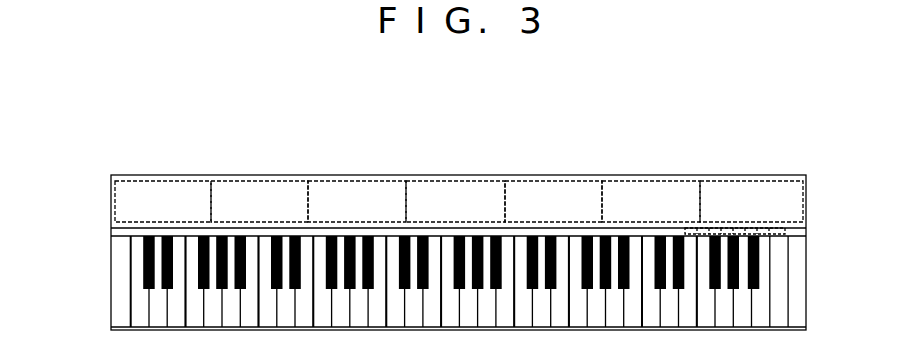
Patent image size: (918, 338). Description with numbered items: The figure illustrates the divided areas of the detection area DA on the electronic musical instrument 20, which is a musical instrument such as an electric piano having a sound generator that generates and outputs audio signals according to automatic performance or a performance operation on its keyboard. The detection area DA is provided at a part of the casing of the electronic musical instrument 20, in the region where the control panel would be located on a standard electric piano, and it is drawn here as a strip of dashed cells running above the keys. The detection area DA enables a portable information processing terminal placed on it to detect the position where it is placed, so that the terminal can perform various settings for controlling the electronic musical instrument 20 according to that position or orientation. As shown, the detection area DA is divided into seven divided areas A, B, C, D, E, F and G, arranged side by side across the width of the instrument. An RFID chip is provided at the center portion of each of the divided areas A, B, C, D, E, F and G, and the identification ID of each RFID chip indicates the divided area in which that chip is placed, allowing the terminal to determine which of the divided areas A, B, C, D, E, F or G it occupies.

The electronic musical instrument 20 is at (688, 155).
The detection area DA is at (112, 227).
The divided area A is at (163, 201).
The divided area B is at (259, 201).
The divided area C is at (357, 201).
The divided area D is at (455, 201).
The divided area E is at (553, 201).
The divided area F is at (651, 201).
The divided area G is at (751, 201).